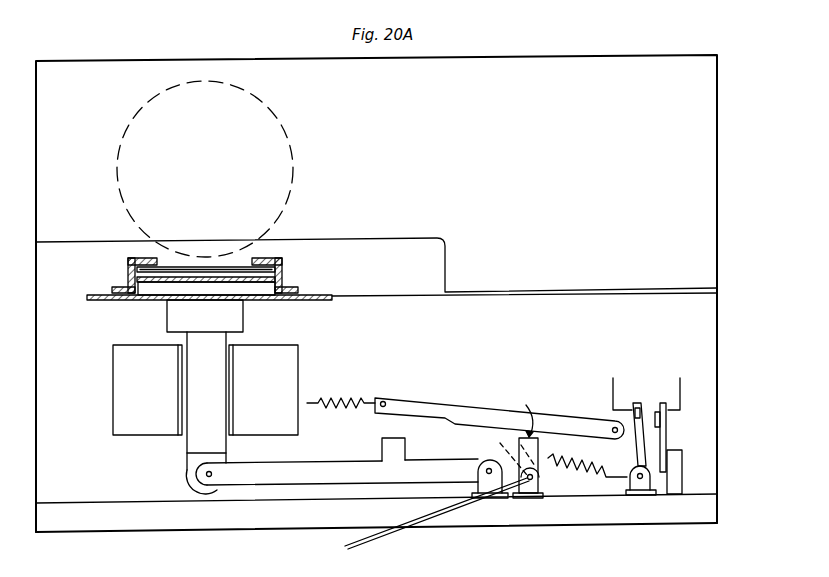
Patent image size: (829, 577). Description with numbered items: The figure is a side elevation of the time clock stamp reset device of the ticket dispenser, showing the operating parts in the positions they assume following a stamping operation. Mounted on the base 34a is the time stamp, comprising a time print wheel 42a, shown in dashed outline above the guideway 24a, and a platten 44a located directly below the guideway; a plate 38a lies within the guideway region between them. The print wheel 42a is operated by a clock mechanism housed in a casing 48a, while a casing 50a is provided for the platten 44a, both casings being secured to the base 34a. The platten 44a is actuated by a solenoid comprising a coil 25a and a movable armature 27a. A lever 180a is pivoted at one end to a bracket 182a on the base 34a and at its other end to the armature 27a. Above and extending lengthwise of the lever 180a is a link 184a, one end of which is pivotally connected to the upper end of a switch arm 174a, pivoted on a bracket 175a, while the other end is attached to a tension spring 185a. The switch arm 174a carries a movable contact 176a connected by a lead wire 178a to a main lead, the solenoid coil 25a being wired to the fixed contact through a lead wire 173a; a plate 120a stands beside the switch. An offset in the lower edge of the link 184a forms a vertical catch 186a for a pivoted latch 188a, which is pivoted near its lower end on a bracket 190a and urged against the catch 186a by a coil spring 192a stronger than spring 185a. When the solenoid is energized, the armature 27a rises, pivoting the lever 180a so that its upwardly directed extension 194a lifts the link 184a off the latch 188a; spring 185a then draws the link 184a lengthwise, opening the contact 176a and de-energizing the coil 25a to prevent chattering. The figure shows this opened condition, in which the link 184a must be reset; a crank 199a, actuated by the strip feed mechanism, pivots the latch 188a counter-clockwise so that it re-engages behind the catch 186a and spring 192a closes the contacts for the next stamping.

The time print wheel 42a is at (294, 173).
The plate 38a is at (197, 271).
The guideway 24a is at (285, 262).
The casing 48a is at (717, 193).
The casing 50a is at (719, 342).
The base 34a is at (138, 532).
The platten 44a is at (176, 318).
The coil 25a is at (113, 405).
The movable armature 27a is at (192, 446).
The lever 180a is at (306, 466).
The upwardly directed extension 194a is at (382, 447).
The tension spring 185a is at (346, 400).
The link 184a is at (476, 412).
The vertical catch 186a is at (528, 402).
The pivoted latch 188a is at (522, 440).
The bracket 190a is at (544, 480).
The bracket 182a is at (478, 470).
The coil spring 192a is at (573, 464).
The bracket 175a is at (648, 496).
The movable contact 176a is at (641, 404).
The switch arm 174a is at (635, 402).
The lead wire 178a is at (612, 386).
The lead wire 173a is at (681, 410).
The plate 120a is at (667, 438).
The crank 199a is at (360, 546).